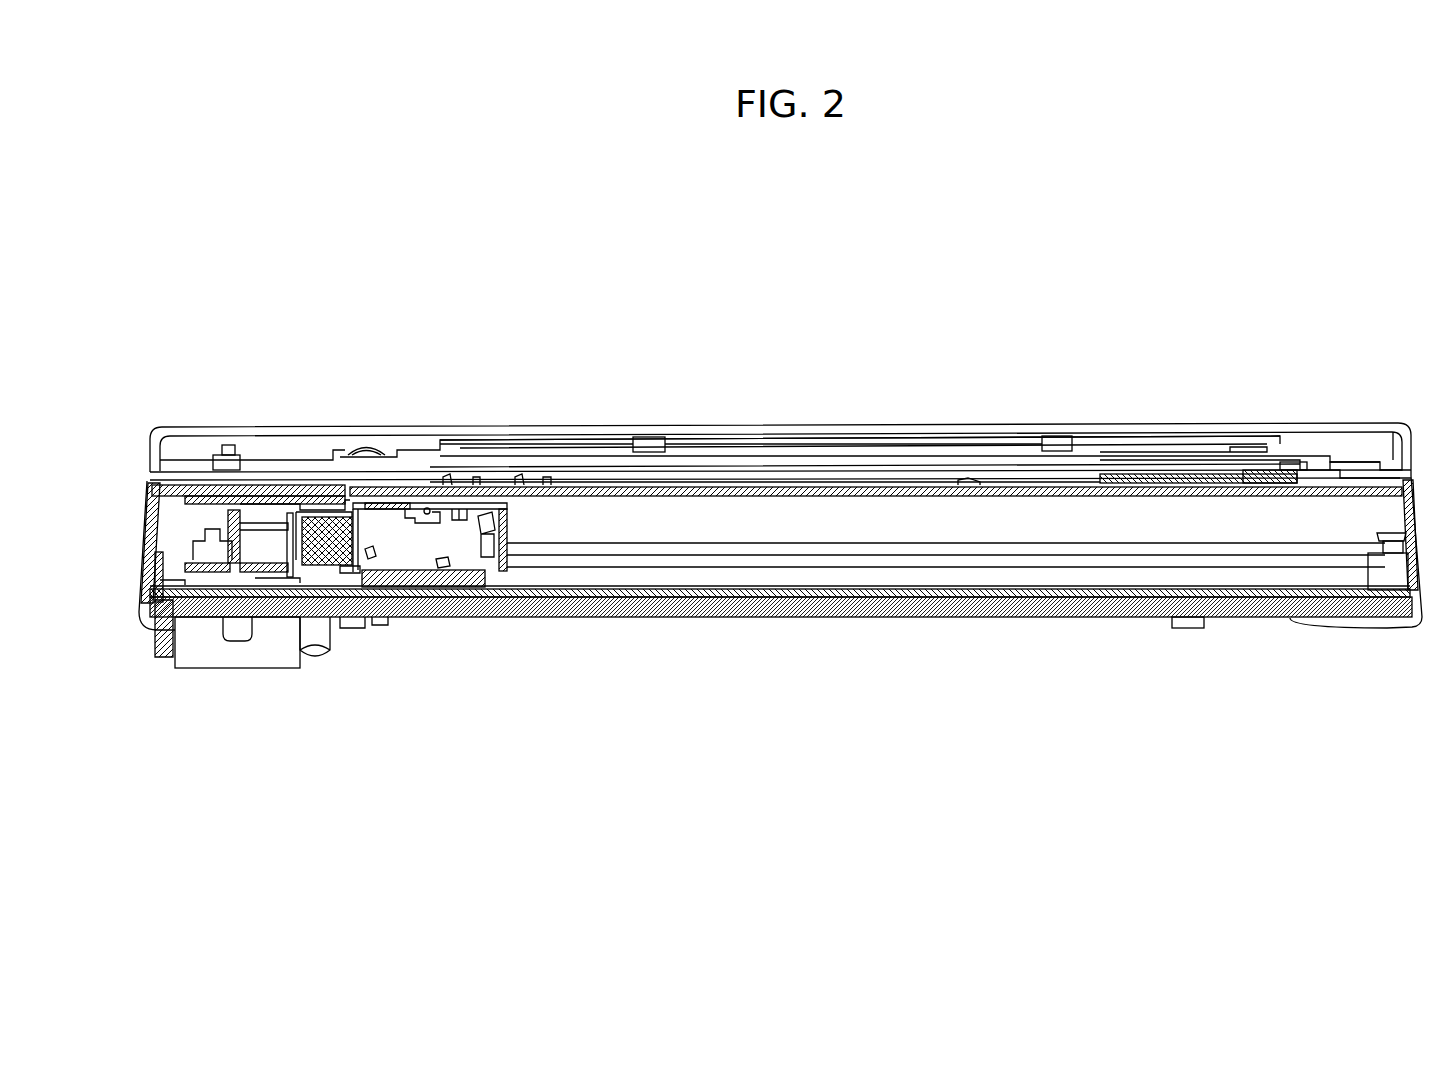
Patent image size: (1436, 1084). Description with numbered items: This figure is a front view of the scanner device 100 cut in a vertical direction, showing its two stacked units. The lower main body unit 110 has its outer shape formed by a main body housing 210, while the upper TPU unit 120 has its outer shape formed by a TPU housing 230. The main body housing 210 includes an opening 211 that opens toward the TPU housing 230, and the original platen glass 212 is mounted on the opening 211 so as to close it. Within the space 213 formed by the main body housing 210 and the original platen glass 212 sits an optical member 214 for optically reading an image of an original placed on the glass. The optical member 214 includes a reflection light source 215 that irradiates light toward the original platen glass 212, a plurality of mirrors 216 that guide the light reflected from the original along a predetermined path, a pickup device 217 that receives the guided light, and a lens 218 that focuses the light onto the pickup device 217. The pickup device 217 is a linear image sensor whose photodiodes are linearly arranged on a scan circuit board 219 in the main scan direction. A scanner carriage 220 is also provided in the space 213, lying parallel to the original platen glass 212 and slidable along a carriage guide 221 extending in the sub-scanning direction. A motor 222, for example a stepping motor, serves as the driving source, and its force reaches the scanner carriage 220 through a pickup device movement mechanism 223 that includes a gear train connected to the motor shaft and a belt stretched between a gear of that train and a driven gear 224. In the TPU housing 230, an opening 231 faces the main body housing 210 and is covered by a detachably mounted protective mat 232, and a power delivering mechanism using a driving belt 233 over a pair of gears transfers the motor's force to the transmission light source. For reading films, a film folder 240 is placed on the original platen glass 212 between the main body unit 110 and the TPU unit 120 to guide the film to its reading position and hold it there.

The scanner device 100 is at (552, 228).
The main body unit 110 is at (619, 640).
The TPU unit 120 is at (731, 402).
The main body housing 210 is at (945, 600).
The opening 211 is at (1338, 478).
The original platen glass 212 is at (1303, 482).
The space 213 is at (1143, 538).
The optical member 214 is at (356, 582).
The reflection light source 215 is at (426, 508).
The mirrors 216 is at (372, 552).
The pickup device 217 is at (232, 642).
The lens 218 is at (342, 567).
The scan circuit board 219 is at (245, 504).
The scanner carriage 220 is at (497, 596).
The carriage guide 221 is at (770, 578).
The motor 222 is at (268, 650).
The pickup device movement mechanism 223 is at (158, 612).
The driven gear 224 is at (1398, 532).
The TPU housing 230 is at (1068, 424).
The opening 231 is at (1215, 436).
The protective mat 232 is at (890, 464).
The driving belt 233 is at (512, 480).
The film folder 240 is at (1160, 474).